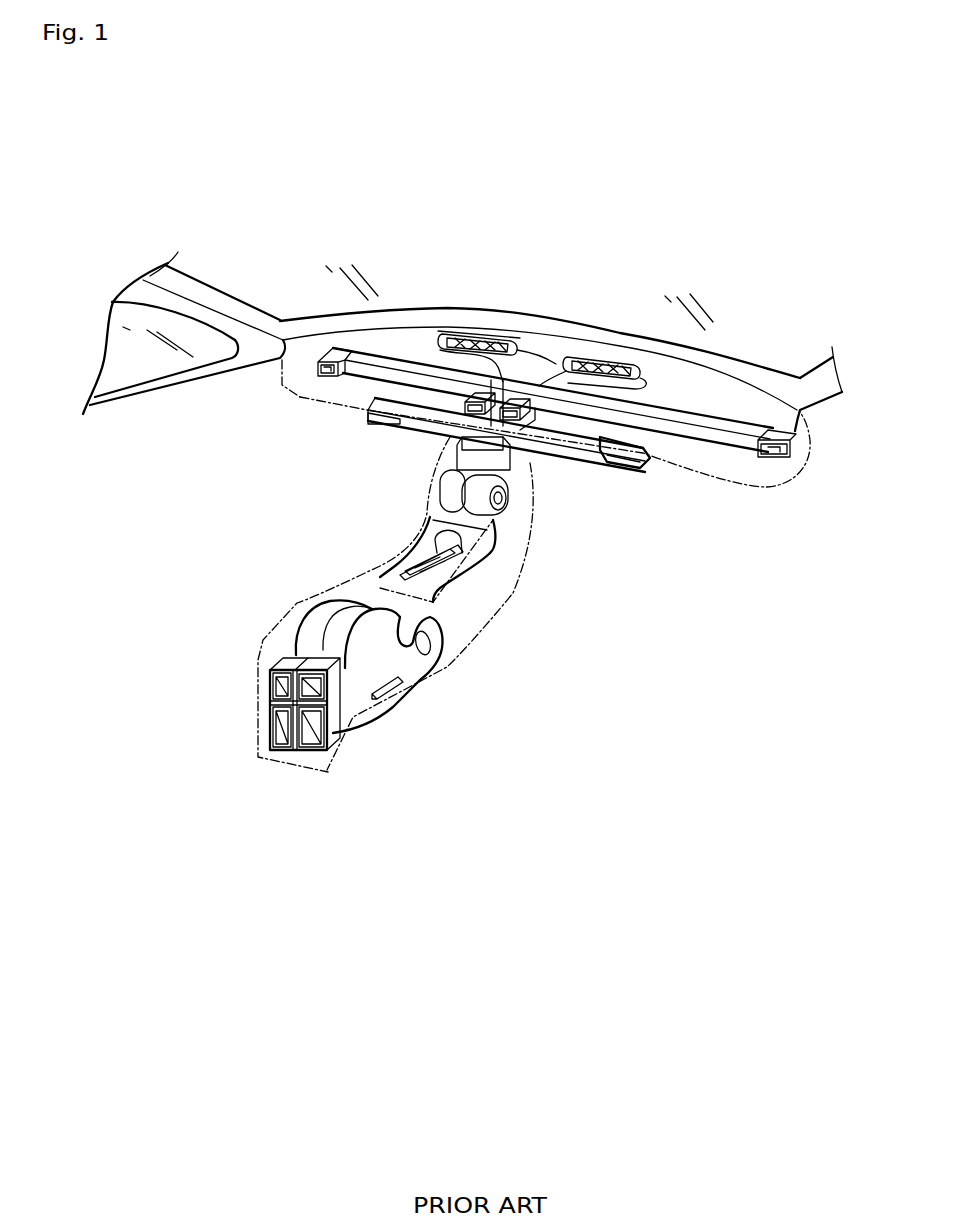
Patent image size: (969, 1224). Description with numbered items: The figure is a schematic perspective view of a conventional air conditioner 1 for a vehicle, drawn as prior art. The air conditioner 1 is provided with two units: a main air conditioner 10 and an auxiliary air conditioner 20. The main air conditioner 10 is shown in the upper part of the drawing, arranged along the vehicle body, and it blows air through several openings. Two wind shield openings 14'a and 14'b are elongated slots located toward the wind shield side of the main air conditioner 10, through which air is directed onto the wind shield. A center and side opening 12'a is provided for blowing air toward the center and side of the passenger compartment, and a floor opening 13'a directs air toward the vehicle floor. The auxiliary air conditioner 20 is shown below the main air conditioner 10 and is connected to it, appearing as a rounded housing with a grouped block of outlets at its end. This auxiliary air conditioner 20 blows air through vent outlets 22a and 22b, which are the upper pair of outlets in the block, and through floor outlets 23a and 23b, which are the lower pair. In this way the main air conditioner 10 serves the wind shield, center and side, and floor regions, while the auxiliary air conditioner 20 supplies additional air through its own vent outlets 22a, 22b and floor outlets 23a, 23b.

The air conditioner 1 is at (203, 146).
The main air conditioner 10 is at (384, 240).
The center and side opening 12'a is at (531, 430).
The floor opening 13'a is at (507, 479).
The wind shield opening 14'a is at (477, 310).
The wind shield opening 14'b is at (601, 334).
The auxiliary air conditioner 20 is at (262, 611).
The vent outlet 22a is at (271, 680).
The vent outlet 22b is at (313, 705).
The floor outlet 23a is at (271, 728).
The floor outlet 23b is at (312, 745).